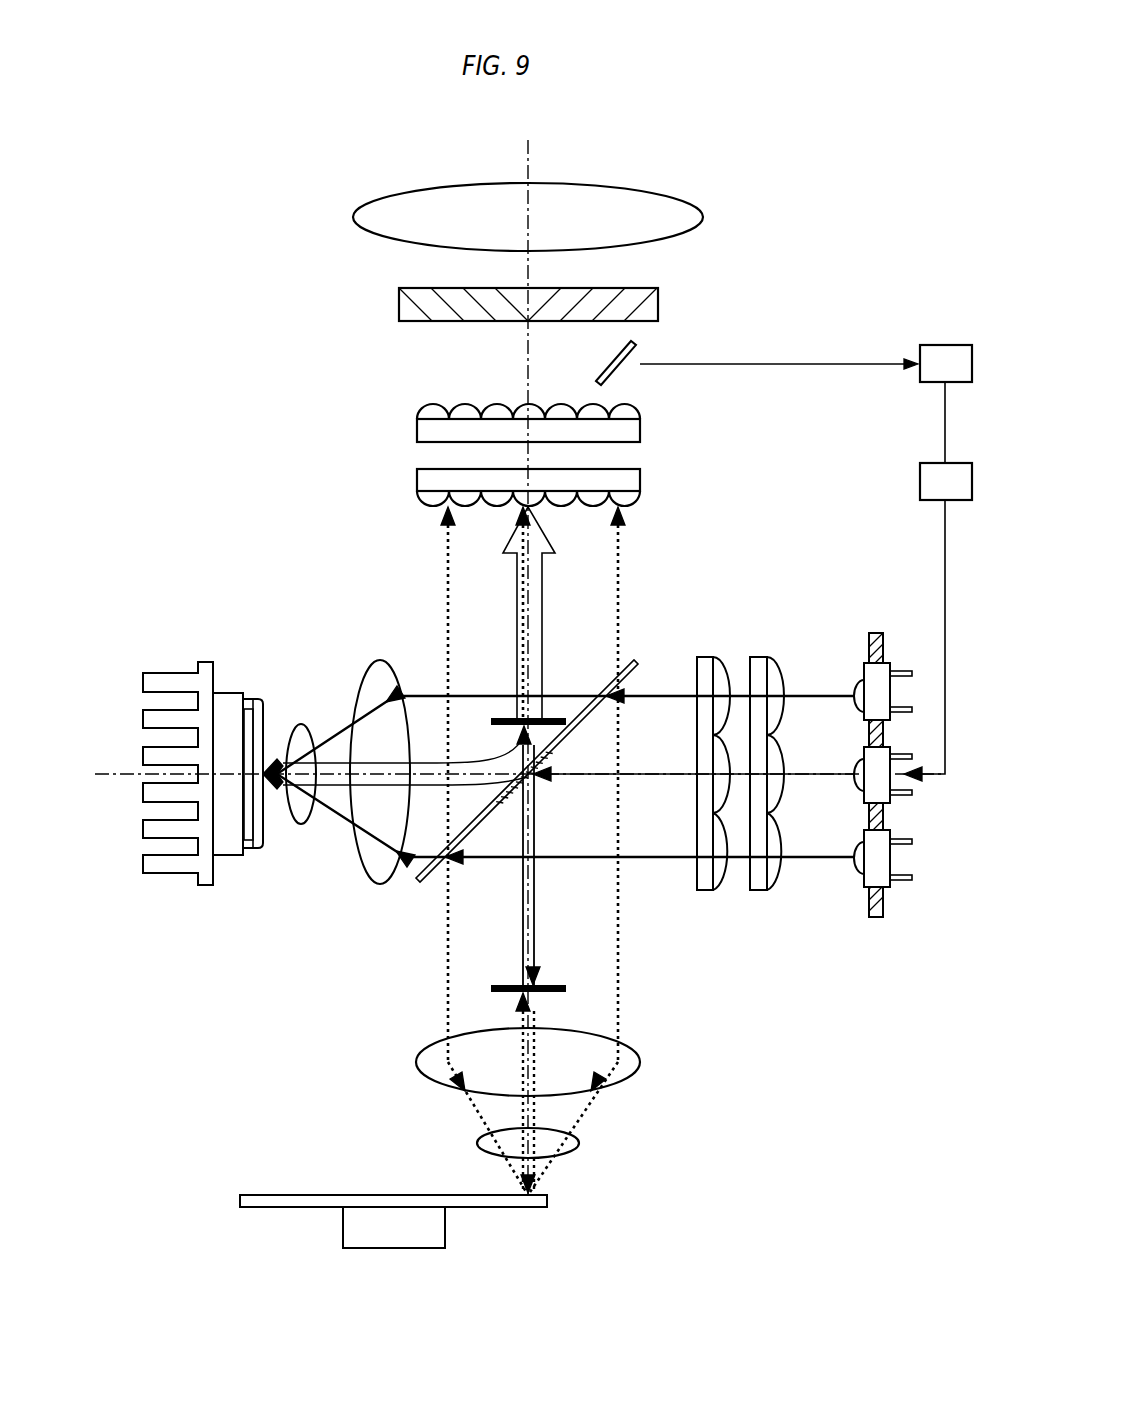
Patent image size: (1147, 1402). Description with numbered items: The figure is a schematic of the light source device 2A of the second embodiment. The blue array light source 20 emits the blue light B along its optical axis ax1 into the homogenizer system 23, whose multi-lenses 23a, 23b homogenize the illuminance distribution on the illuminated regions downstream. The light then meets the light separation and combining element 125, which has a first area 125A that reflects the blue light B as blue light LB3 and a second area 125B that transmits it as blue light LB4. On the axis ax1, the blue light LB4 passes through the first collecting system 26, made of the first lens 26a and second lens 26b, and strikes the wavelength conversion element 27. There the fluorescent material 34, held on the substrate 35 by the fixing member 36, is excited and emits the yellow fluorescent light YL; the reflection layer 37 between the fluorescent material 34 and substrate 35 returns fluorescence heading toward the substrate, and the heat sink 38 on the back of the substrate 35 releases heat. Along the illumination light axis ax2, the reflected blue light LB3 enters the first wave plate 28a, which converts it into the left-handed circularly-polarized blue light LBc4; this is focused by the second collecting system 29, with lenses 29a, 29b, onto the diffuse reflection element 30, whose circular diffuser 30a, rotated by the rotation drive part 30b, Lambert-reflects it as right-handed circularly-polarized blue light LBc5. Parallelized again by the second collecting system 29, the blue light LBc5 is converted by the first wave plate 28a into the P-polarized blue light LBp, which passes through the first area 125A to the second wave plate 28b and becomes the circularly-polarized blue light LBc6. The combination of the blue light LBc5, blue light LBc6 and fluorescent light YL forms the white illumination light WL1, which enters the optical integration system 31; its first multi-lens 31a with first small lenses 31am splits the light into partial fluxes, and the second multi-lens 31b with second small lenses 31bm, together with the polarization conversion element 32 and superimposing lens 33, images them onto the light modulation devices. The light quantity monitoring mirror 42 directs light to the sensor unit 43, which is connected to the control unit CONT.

The light source device 2A is at (522, 713).
The blue array light source 20 is at (886, 640).
The homogenizer system 23 is at (753, 708).
The multi-lens 23a is at (770, 666).
The multi-lens 23b is at (718, 666).
The first collecting system 26 is at (345, 826).
The first lens 26a is at (380, 884).
The second lens 26b is at (301, 824).
The wavelength conversion element 27 is at (203, 775).
The first wave plate 28a is at (565, 988).
The second wave plate 28b is at (505, 716).
The second collecting system 29 is at (607, 1093).
The lens 29a is at (632, 1074).
The lens 29b is at (578, 1150).
The diffuse reflection element 30 is at (366, 1211).
The diffuser 30a is at (270, 1208).
The rotation drive part 30b is at (430, 1236).
The optical integration system 31 is at (559, 441).
The first multi-lens 31a is at (532, 478).
The second multi-lens 31b is at (532, 411).
The first small lenses 31am is at (432, 500).
The second small lenses 31bm is at (432, 411).
The polarization conversion element 32 is at (655, 300).
The superimposing lens 33 is at (660, 204).
The fluorescent material 34 is at (258, 736).
The substrate 35 is at (228, 843).
The fixing member 36 is at (250, 850).
The reflection layer 37 is at (248, 720).
The heat sink 38 is at (204, 660).
The light quantity monitoring mirror 42 is at (636, 360).
The sensor unit 43 is at (806, 543).
The light separation and combining element 125 is at (555, 724).
The first area 125A is at (517, 793).
The second area 125B is at (598, 700).
The optical axis ax1 is at (120, 776).
The illumination light axis ax2 is at (533, 148).
The blue light B is at (828, 873).
The blue light LB3 is at (540, 952).
The blue light LB4 is at (418, 760).
The blue light LBp is at (520, 958).
The blue light LBc4 is at (520, 1112).
The blue light LBc5 is at (616, 600).
The blue light LBc6 is at (521, 572).
The fluorescent light YL is at (517, 628).
The white illumination light WL1 is at (318, 510).
The control unit CONT is at (935, 463).